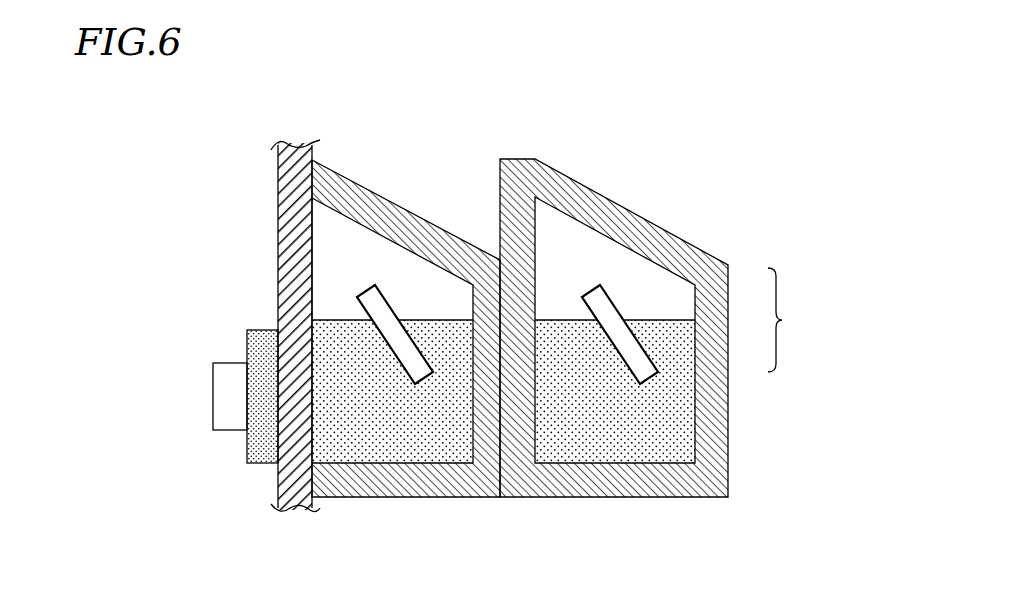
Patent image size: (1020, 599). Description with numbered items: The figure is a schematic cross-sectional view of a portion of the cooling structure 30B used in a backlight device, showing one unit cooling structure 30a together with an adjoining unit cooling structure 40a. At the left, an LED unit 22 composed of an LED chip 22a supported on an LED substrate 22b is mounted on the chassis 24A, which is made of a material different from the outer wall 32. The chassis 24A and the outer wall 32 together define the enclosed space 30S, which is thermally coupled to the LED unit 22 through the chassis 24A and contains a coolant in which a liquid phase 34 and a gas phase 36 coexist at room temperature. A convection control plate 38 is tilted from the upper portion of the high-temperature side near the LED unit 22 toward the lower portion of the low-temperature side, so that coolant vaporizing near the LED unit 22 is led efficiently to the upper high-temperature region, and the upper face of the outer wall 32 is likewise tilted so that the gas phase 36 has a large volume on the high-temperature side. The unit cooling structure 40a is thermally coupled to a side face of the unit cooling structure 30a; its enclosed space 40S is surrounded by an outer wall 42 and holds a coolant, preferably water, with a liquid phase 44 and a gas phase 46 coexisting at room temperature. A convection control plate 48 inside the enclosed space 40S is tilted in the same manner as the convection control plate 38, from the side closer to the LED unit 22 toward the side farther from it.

The LED unit 22 is at (220, 369).
The LED chip 22a is at (221, 412).
The LED substrate 22b is at (253, 455).
The chassis 24A is at (300, 512).
The cooling structure 30B is at (591, 283).
The unit cooling structure 30a is at (406, 309).
The enclosed space 30S is at (483, 187).
The outer wall 32 is at (402, 490).
The liquid phase 34 is at (452, 343).
The gas phase 36 is at (417, 293).
The convection control plate 38 is at (385, 289).
The unit cooling structure 40a is at (667, 341).
The enclosed space 40S is at (801, 320).
The outer wall 42 is at (623, 490).
The liquid phase 44 is at (673, 387).
The gas phase 46 is at (673, 313).
The convection control plate 48 is at (606, 298).